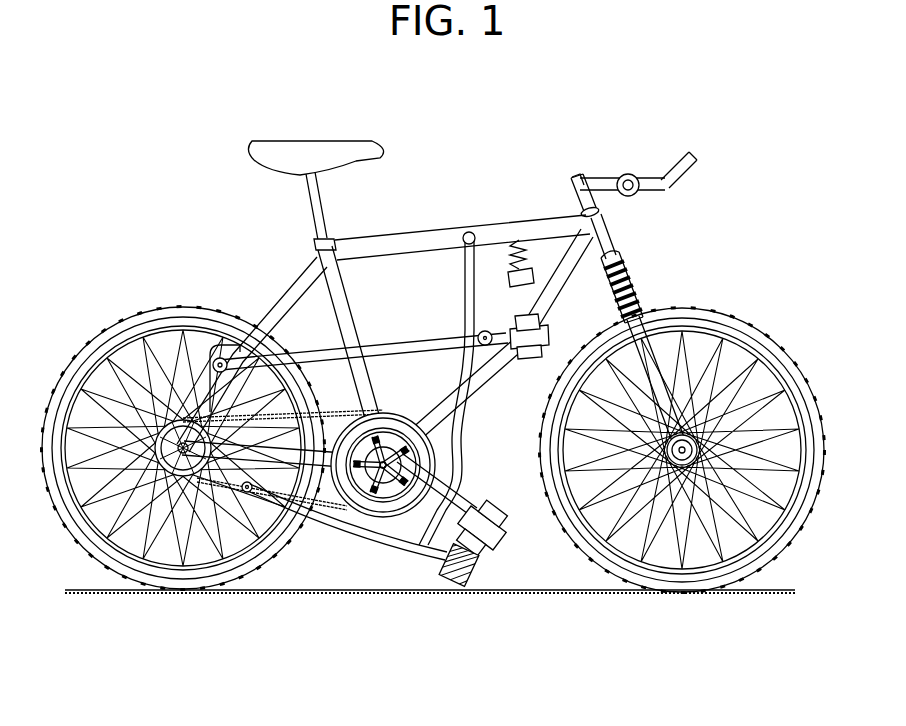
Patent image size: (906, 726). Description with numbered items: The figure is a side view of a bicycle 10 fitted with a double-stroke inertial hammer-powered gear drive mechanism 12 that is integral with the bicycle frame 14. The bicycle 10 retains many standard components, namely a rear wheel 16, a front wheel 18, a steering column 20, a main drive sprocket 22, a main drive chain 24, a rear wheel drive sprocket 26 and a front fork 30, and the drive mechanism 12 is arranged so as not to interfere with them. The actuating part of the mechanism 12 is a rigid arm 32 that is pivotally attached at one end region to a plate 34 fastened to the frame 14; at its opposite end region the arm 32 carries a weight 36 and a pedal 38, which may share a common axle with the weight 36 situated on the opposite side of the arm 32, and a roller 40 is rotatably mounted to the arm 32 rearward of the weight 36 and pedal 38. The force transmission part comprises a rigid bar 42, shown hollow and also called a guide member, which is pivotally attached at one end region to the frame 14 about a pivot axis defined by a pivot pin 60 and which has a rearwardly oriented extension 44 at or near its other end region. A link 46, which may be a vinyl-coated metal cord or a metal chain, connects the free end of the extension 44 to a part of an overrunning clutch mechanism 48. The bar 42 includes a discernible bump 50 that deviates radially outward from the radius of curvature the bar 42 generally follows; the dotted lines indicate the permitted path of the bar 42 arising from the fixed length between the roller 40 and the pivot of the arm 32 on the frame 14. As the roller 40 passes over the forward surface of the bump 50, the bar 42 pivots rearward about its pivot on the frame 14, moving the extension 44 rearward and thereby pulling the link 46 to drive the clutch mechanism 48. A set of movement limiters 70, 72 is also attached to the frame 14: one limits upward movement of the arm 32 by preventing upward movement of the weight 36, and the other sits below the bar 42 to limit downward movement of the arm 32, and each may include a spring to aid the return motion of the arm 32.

The bicycle 10 is at (162, 268).
The drive mechanism 12 is at (524, 505).
The bicycle frame 14 is at (405, 242).
The rear wheel 16 is at (138, 317).
The front wheel 18 is at (733, 312).
The steering column 20 is at (603, 207).
The main drive sprocket 22 is at (405, 415).
The main drive chain 24 is at (215, 478).
The rear wheel drive sprocket 26 is at (175, 482).
The front fork 30 is at (672, 380).
The rigid arm 32 is at (317, 353).
The plate 34 is at (228, 345).
The weight 36 is at (541, 317).
The pedal 38 is at (548, 330).
The roller 40 is at (487, 330).
The rigid bar 42 is at (462, 413).
The extension 44 is at (275, 513).
The link 46 is at (353, 494).
The clutch mechanism 48 is at (393, 413).
The bump 50 is at (462, 484).
The pivot pin 60 is at (520, 240).
The movement limiter 70 is at (602, 182).
The movement limiter 72 is at (460, 585).